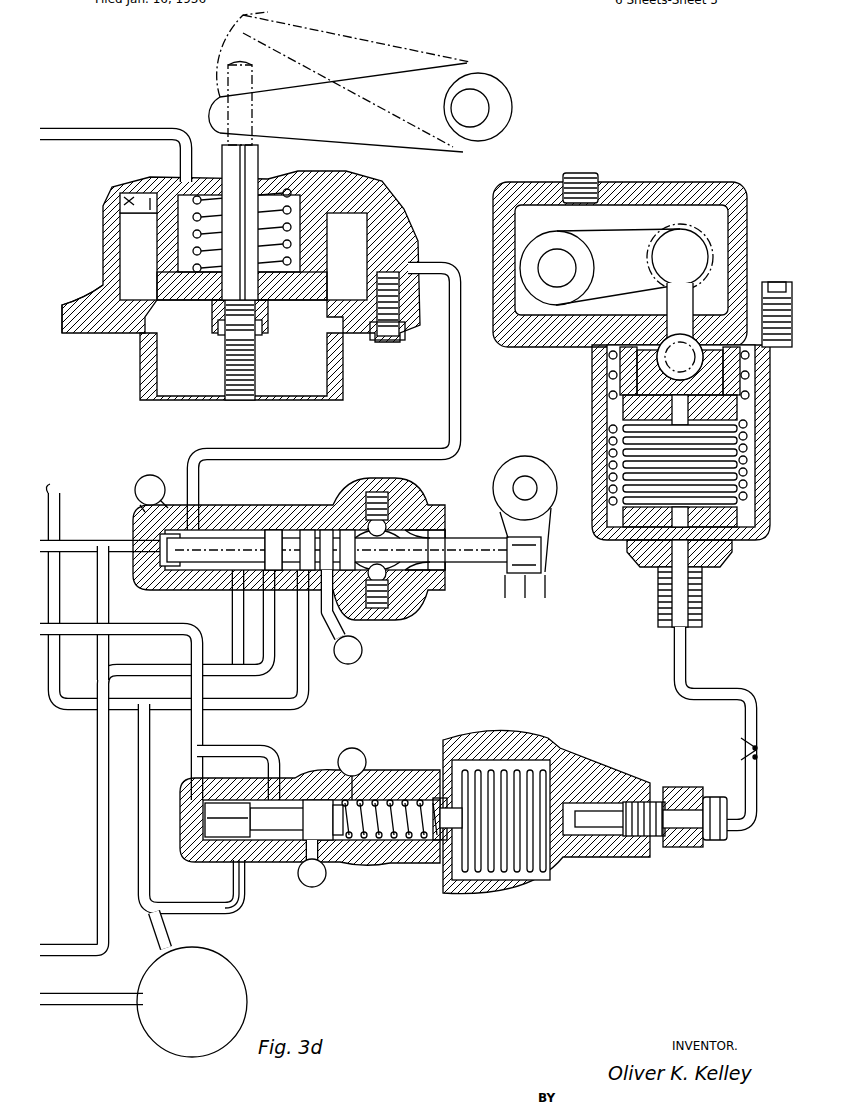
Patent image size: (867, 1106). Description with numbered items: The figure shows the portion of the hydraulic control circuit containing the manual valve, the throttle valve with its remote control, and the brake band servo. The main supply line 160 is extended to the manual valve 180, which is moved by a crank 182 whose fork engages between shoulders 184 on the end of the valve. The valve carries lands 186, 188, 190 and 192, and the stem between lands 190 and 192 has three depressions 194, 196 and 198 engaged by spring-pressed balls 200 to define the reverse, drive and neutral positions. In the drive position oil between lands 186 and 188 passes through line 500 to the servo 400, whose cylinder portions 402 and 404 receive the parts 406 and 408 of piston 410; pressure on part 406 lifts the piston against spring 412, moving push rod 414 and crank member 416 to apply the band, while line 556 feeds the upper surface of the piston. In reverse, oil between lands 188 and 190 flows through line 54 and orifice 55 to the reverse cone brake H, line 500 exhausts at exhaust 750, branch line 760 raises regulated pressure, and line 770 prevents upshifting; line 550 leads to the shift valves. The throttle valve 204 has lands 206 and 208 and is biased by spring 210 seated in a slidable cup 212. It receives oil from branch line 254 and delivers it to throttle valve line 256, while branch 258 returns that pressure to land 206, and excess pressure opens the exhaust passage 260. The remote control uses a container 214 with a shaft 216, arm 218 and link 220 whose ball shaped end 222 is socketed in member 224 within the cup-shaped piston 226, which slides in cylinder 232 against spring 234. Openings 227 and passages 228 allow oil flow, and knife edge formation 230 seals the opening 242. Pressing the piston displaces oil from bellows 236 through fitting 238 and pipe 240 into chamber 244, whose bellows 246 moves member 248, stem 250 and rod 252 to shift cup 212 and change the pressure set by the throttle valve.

The servo 400 is at (392, 215).
The cylinder portion 402 is at (95, 300).
The cylinder portion 404 is at (148, 373).
The piston part 406 is at (135, 208).
The piston part 408 is at (170, 318).
The piston 410 is at (290, 305).
The spring 412 is at (300, 192).
The push rod 414 is at (262, 150).
The crank member 416 is at (385, 78).
The line 500 is at (428, 262).
The line 556 is at (98, 128).
The container 214 is at (497, 215).
The shaft 216 is at (550, 262).
The arm 218 is at (632, 250).
The link 220 is at (672, 297).
The ball shaped end 222 is at (700, 322).
The member 224 is at (752, 372).
The cup-shaped piston 226 is at (755, 392).
The openings 227 is at (600, 352).
The passages 228 is at (612, 388).
The knife edge formation 230 is at (740, 405).
The cylinder 232 is at (764, 438).
The spring 234 is at (745, 483).
The bellows 236 is at (625, 442).
The fitting 238 is at (655, 572).
The pipe 240 is at (745, 735).
The opening 242 is at (640, 410).
The manual valve 180 is at (239, 567).
The crank 182 is at (548, 512).
The shoulders 184 is at (507, 530).
The land 186 is at (182, 572).
The land 188 is at (272, 580).
The land 190 is at (343, 500).
The land 192 is at (442, 578).
The depression 194 is at (358, 522).
The depression 196 is at (400, 532).
The depression 198 is at (425, 545).
The balls 200 is at (395, 600).
The exhaust 750 is at (141, 478).
The line 770 is at (48, 493).
The line 550 is at (70, 543).
The main supply line 160 is at (270, 647).
The branch 258 is at (193, 768).
The throttle valve line 256 is at (200, 745).
The branch line 254 is at (232, 914).
The line 54 is at (150, 730).
The orifice 55 is at (162, 930).
The branch line 760 is at (130, 993).
The reverse cone brake H is at (246, 996).
The throttle valve 204 is at (297, 793).
The land 206 is at (222, 800).
The land 208 is at (320, 800).
The spring 210 is at (372, 805).
The cup 212 is at (405, 800).
The exhaust passage 260 is at (327, 873).
The chamber 244 is at (545, 772).
The bellows 246 is at (490, 765).
The member 248 is at (570, 790).
The stem 250 is at (595, 830).
The rod 252 is at (447, 862).